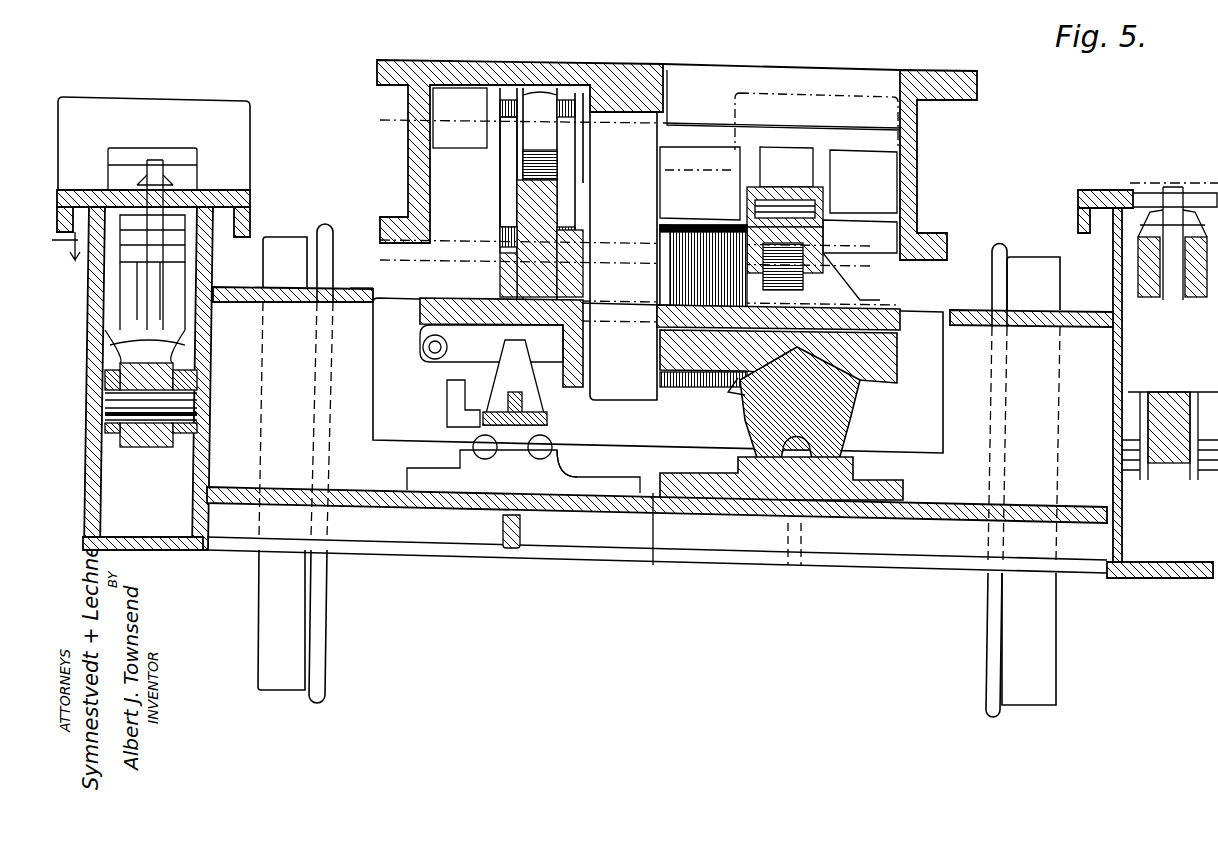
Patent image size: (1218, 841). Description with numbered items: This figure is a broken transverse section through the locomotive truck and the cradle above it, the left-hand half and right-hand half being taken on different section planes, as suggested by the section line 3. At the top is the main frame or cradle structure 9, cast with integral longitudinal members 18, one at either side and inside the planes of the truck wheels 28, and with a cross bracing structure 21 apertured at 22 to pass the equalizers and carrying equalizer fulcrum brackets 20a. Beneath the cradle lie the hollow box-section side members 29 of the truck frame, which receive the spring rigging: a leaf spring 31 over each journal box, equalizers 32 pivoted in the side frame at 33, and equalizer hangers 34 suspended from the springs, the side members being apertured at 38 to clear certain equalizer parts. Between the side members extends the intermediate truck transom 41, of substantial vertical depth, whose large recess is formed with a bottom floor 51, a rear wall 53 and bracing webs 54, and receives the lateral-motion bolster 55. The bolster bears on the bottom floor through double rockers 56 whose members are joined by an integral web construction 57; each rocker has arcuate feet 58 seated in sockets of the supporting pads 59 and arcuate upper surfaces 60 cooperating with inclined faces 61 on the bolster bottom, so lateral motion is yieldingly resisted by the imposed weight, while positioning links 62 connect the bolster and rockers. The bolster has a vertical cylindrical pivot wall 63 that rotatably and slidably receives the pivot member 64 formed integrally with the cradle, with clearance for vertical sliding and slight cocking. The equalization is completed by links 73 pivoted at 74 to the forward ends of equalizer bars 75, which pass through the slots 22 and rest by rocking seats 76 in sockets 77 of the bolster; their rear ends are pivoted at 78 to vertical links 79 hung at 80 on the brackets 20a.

The section line 3 is at (632, 210).
The main frame or cradle structure 9 is at (540, 64).
The longitudinal members 18 is at (410, 125).
The equalizer fulcrum brackets 20a is at (545, 105).
The cross bracing structure 21 is at (780, 145).
The apertures 22 is at (760, 163).
The wheels 28 is at (325, 614).
The side members of the truck frame 29 is at (213, 265).
The leaf spring 31 is at (222, 240).
The equalizers 32 is at (150, 449).
The equalizer pivot 33 is at (95, 405).
The equalizer hangers 34 is at (145, 299).
The apertures in side frame members 38 is at (185, 176).
The intermediate truck transom 41 is at (440, 558).
The bottom floor 51 is at (405, 480).
The rear wall 53 is at (380, 286).
The bracing webs 54 is at (333, 287).
The lateral-motion bolster 55 is at (412, 298).
The double rockers 56 is at (555, 426).
The integral web construction 57 is at (483, 424).
The arcuate feet 58 is at (492, 458).
The supporting pads 59 is at (600, 476).
The arcuate upper surfaces 60 is at (447, 398).
The inclined faces 61 is at (420, 348).
The positioning links 62 is at (898, 340).
The vertical cylindrical pivot wall 63 is at (584, 341).
The pivot member 64 is at (640, 256).
The links 73 is at (842, 256).
The pivotal connection 74 is at (825, 210).
The equalizer bars 75 is at (500, 232).
The rocking seats 76 is at (660, 288).
The recesses or sockets 77 is at (505, 272).
The pivotal connection 78 is at (510, 196).
The vertical links 79 is at (503, 180).
The upper pivot 80 is at (503, 156).